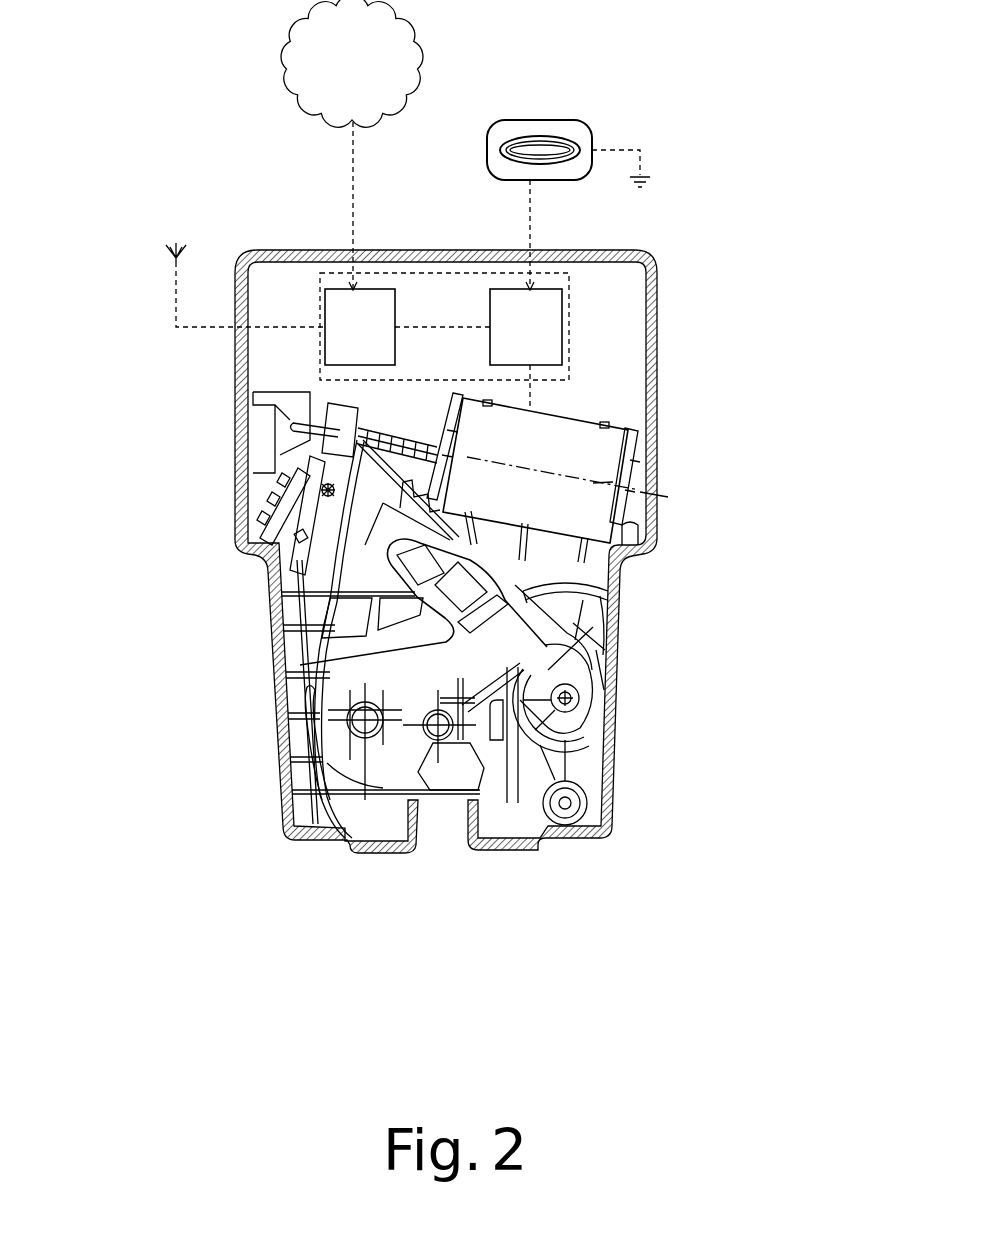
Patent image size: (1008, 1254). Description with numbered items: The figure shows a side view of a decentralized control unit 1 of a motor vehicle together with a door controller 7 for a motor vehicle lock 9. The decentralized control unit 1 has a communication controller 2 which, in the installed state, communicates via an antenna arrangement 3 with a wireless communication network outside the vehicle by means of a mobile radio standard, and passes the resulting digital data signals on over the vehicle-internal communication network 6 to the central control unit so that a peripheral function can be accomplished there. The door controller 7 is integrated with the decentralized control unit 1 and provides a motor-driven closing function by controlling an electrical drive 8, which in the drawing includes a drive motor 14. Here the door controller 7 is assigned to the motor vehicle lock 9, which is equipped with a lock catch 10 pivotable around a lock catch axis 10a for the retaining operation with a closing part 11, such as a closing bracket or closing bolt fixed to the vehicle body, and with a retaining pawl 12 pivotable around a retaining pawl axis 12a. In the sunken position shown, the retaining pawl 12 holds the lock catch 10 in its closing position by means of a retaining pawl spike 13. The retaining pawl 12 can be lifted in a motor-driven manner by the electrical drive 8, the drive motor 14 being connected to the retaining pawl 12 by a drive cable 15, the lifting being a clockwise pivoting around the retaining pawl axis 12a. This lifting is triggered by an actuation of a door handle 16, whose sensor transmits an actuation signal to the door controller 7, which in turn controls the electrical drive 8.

The decentralized control unit 1 is at (477, 499).
The communication controller 2 is at (330, 298).
The antenna arrangement 3 is at (160, 256).
The communication network 6 is at (360, 73).
The door controller 7 is at (547, 323).
The electrical drive 8 is at (210, 458).
The motor vehicle lock 9 is at (780, 700).
The lock catch 10 is at (398, 775).
The lock catch axis 10a is at (358, 737).
The closing part 11 is at (432, 750).
The retaining pawl 12 is at (600, 722).
The retaining pawl axis 12a is at (592, 712).
The retaining pawl spike 13 is at (565, 692).
The electric motor 14 is at (600, 448).
The drive cable 15 is at (345, 630).
The door handle 16 is at (573, 122).